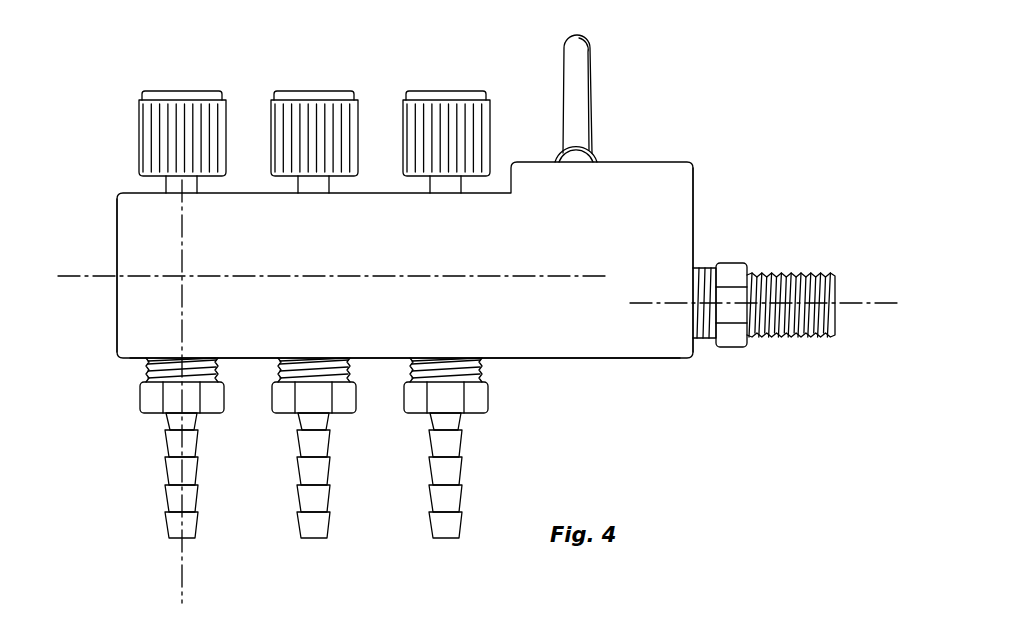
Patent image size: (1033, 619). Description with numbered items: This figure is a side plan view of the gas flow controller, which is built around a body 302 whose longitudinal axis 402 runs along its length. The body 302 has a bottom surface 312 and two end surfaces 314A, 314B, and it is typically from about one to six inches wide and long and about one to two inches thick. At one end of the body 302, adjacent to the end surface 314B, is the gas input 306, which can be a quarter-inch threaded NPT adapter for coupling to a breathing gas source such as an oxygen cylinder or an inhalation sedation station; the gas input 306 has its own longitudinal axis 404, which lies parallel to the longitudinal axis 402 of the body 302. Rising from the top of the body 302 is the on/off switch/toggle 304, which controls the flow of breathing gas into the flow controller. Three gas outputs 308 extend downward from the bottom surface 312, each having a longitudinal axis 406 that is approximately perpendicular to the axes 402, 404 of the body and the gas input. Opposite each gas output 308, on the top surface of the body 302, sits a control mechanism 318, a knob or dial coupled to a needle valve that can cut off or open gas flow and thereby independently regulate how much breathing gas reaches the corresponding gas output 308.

The body 302 is at (702, 146).
The on/off switch/toggle 304 is at (577, 95).
The gas input 306 is at (800, 272).
The gas output 308 is at (173, 522).
The bottom surface 312 is at (597, 364).
The end surface 314A is at (114, 239).
The end surface 314B is at (697, 222).
The control mechanism 318 is at (172, 91).
The longitudinal axis 402 is at (80, 278).
The longitudinal axis 404 is at (880, 302).
The longitudinal axis 406 is at (184, 588).